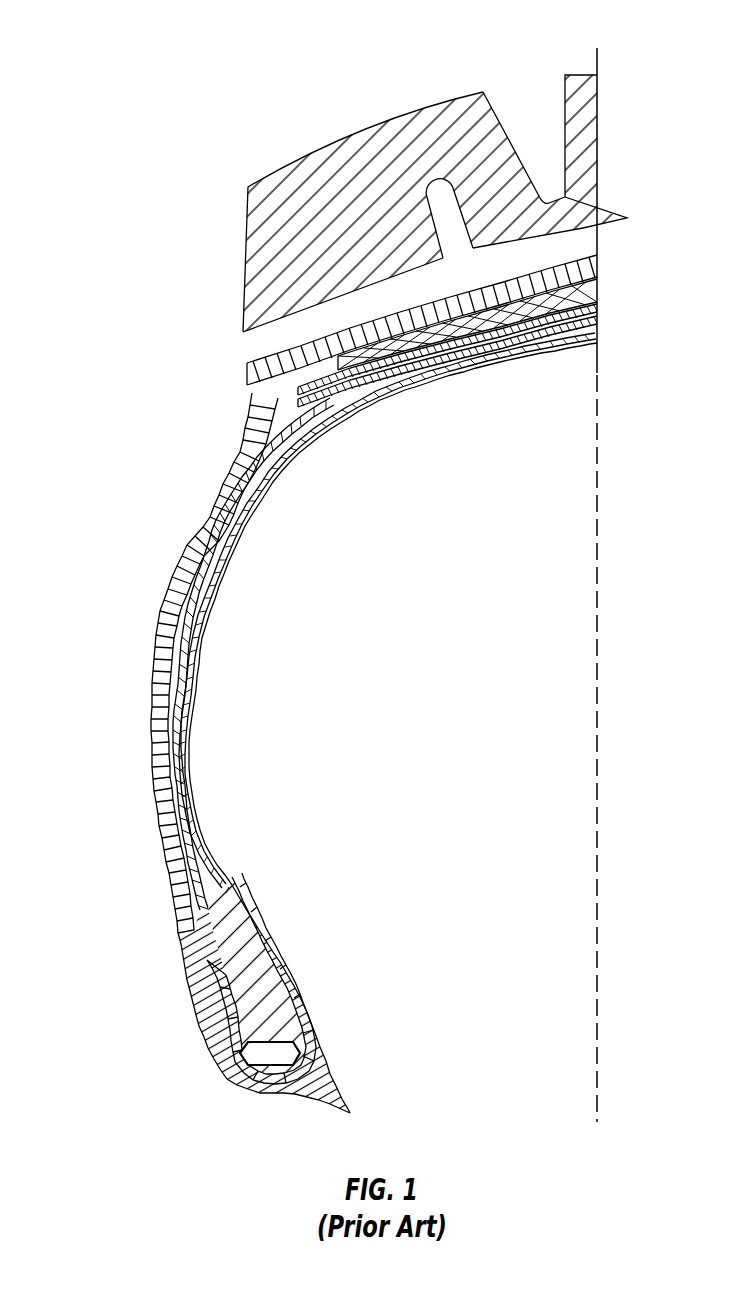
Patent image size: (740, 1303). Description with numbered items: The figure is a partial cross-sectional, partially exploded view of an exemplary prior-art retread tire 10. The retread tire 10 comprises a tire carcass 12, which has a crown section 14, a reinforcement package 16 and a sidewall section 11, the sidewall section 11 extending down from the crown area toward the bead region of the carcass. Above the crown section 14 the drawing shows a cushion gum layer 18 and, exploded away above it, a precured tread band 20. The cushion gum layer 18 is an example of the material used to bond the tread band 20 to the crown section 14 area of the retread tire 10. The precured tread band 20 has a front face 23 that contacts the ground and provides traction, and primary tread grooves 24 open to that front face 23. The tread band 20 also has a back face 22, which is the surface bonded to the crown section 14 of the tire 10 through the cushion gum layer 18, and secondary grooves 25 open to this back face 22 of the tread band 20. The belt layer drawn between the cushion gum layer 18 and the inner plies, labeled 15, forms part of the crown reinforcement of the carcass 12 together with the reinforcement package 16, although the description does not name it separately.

The retread tire 10 is at (131, 308).
The sidewall section 11 is at (160, 716).
The tire carcass 12 is at (173, 577).
The crown section 14 is at (470, 342).
The belt 15 is at (588, 295).
The reinforcement package 16 is at (388, 372).
The cushion gum layer 18 is at (247, 376).
The precured tread band 20 is at (243, 271).
The back face 22 is at (583, 231).
The front face 23 is at (450, 100).
The primary tread grooves 24 is at (527, 110).
The secondary grooves 25 is at (440, 198).